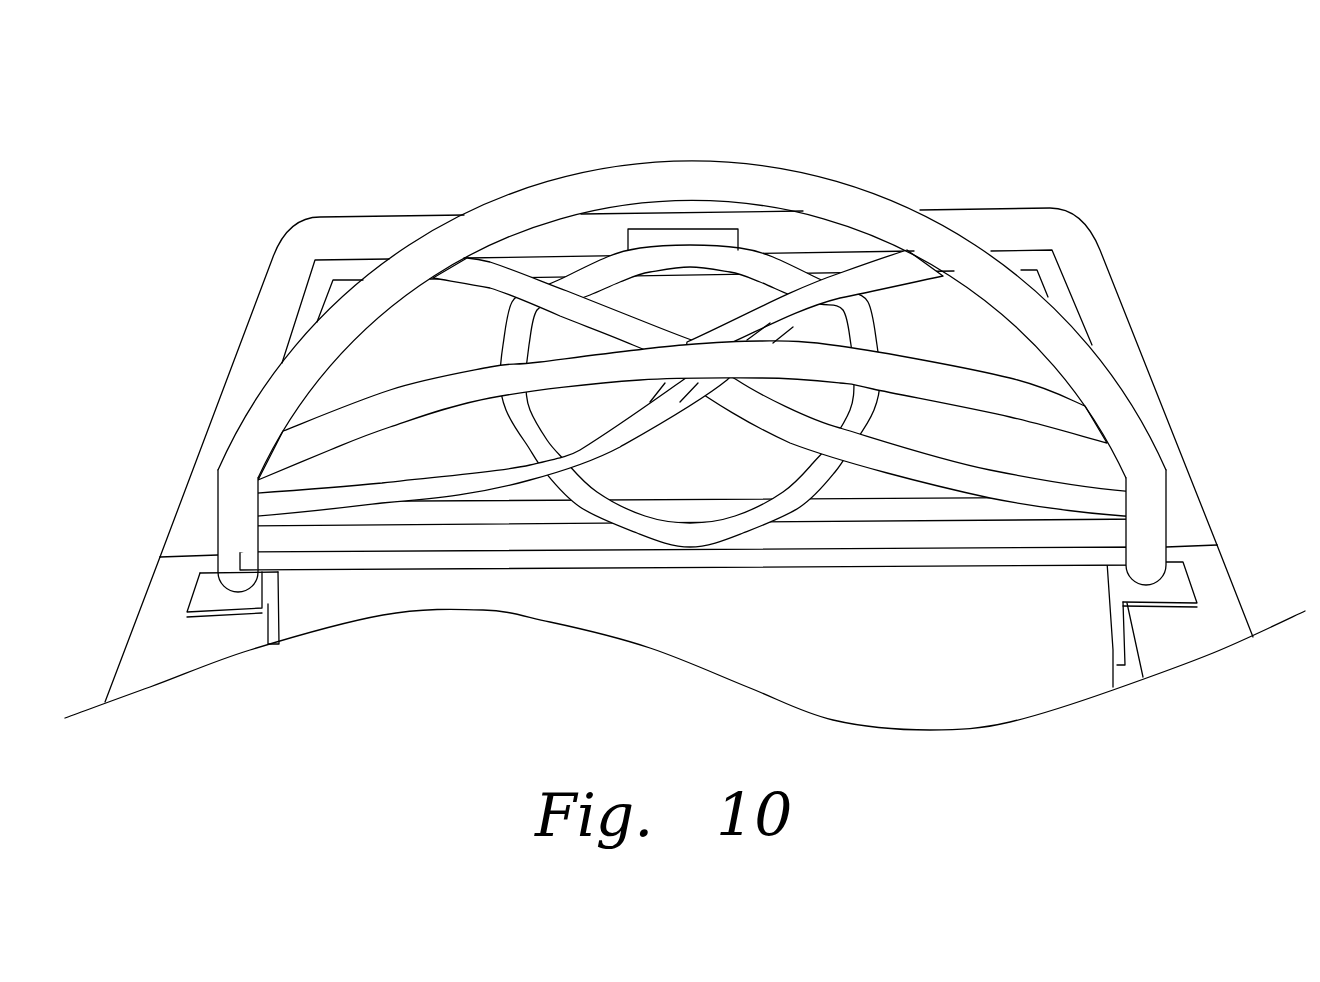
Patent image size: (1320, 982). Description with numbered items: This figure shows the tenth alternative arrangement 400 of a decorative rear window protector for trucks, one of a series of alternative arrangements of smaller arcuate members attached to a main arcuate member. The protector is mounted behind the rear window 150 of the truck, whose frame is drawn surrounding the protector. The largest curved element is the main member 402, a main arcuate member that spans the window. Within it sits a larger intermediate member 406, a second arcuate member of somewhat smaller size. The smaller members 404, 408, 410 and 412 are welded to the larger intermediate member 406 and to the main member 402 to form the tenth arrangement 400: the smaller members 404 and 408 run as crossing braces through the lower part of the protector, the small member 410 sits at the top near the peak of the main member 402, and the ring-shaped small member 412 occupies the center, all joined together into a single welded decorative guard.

The tenth arrangement 400 is at (522, 181).
The main member 402 is at (855, 207).
The smaller member 404 is at (960, 483).
The larger intermediate member 406 is at (1033, 402).
The smaller member 408 is at (382, 492).
The smaller member 410 is at (658, 256).
The smaller member 412 is at (697, 535).
The rear window 150 is at (1069, 295).